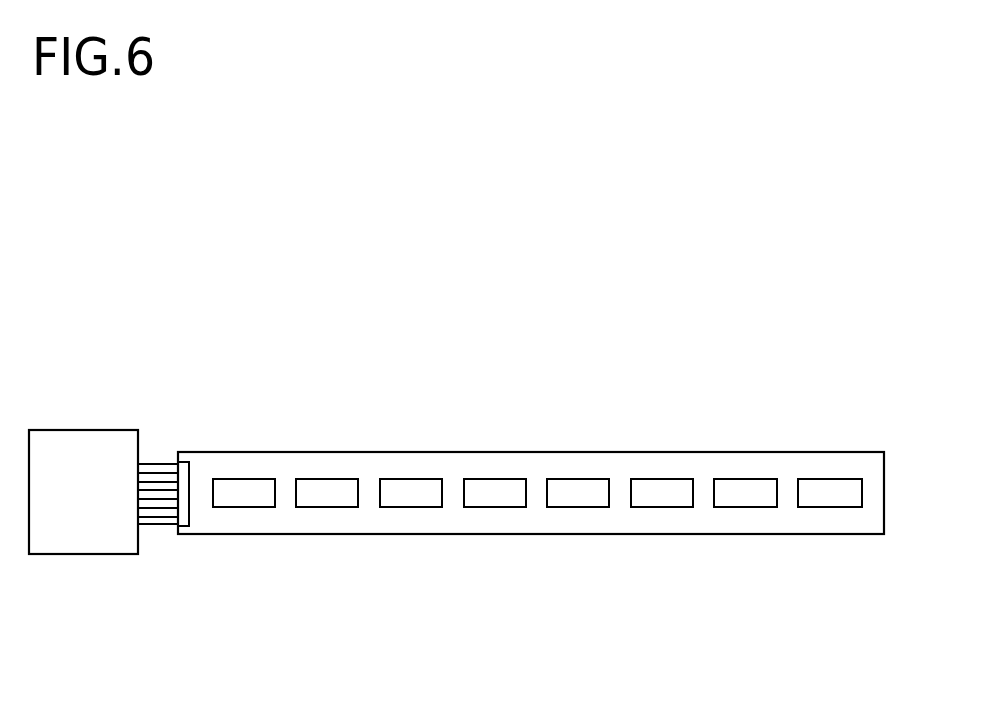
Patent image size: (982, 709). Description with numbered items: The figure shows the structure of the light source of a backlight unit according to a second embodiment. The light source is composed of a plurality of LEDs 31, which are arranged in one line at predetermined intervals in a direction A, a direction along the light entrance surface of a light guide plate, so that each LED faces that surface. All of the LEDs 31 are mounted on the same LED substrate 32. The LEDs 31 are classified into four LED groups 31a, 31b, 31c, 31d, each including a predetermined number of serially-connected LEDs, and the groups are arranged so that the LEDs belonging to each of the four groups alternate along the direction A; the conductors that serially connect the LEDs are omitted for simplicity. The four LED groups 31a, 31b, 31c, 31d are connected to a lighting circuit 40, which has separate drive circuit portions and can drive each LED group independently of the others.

The lighting circuit 40 is at (78, 442).
The LED substrate 32 is at (855, 460).
The LED 31 is at (561, 492).
The LED group 31a is at (239, 489).
The LED group 31b is at (327, 498).
The LED group 31c is at (411, 489).
The LED group 31d is at (495, 498).
The direction A is at (643, 631).